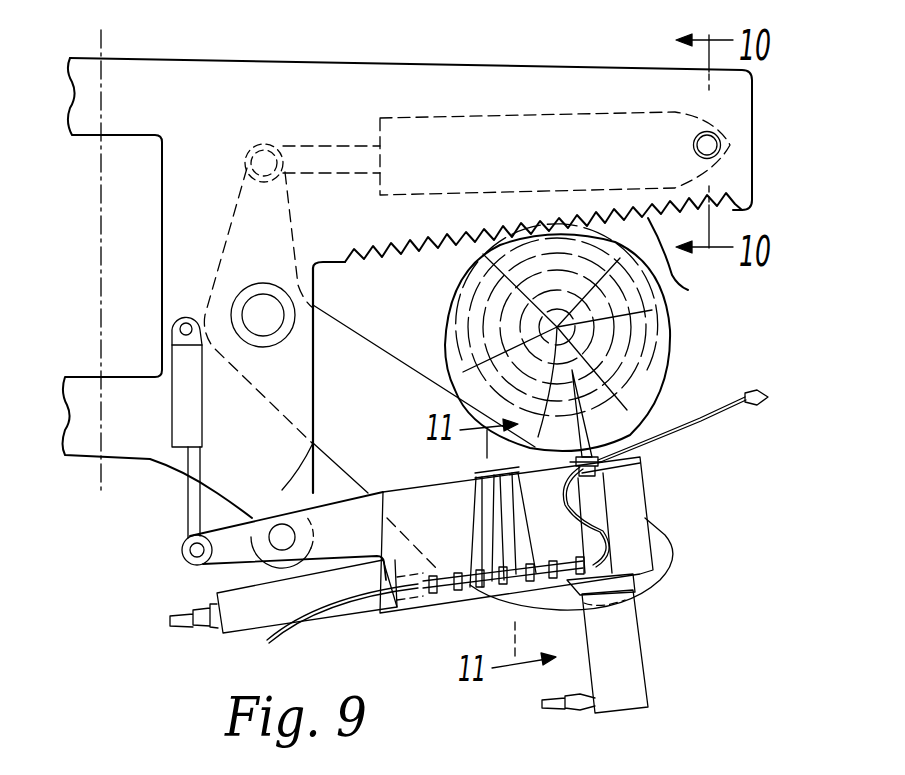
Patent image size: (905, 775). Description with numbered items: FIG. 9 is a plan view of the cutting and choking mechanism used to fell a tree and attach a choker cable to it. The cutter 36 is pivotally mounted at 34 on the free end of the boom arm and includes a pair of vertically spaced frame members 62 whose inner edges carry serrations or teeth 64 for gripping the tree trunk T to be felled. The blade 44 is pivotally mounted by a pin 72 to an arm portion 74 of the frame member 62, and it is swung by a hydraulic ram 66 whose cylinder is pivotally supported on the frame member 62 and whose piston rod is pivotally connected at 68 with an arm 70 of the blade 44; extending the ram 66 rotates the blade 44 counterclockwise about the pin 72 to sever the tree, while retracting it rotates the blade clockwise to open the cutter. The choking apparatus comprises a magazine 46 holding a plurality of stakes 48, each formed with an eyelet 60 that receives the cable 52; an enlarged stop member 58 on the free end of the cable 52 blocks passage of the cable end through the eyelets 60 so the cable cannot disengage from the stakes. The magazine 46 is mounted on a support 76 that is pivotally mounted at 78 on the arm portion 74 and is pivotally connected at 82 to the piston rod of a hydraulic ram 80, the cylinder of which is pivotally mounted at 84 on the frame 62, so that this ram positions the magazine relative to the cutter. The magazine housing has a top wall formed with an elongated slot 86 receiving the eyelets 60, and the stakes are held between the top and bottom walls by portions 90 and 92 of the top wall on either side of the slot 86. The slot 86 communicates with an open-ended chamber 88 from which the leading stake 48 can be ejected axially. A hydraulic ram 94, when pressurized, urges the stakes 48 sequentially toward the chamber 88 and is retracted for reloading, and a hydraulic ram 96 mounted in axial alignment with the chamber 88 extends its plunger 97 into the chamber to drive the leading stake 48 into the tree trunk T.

The cutter 36 is at (372, 64).
The arm portion 74 is at (162, 222).
The pivot point 34 is at (103, 281).
The frame member 62 is at (506, 104).
The hydraulic ram 66 is at (475, 115).
The pivot connection 68 is at (258, 150).
The arm 70 is at (225, 235).
The pin 72 is at (263, 315).
The blade 44 is at (388, 372).
The serrations or teeth 64 is at (688, 290).
The tree / log T is at (640, 345).
The hydraulic ram 80 is at (188, 408).
The pivot mounting 84 is at (180, 329).
The pivot connection 82 is at (182, 546).
The pivot 78 is at (282, 530).
The support 76 is at (348, 517).
The top wall portion 92 is at (406, 508).
The stakes 48 is at (497, 508).
The elongated slot 86 is at (448, 576).
The eyelet 60 is at (575, 560).
The top wall portion 90 is at (450, 598).
The magazine 46 is at (418, 616).
The open-ended chamber 88 is at (605, 475).
The plunger 97 is at (605, 508).
The cable 52 is at (695, 425).
The enlarged stop member 58 is at (765, 391).
The hydraulic ram 96 is at (617, 650).
The hydraulic ram 94 is at (240, 620).